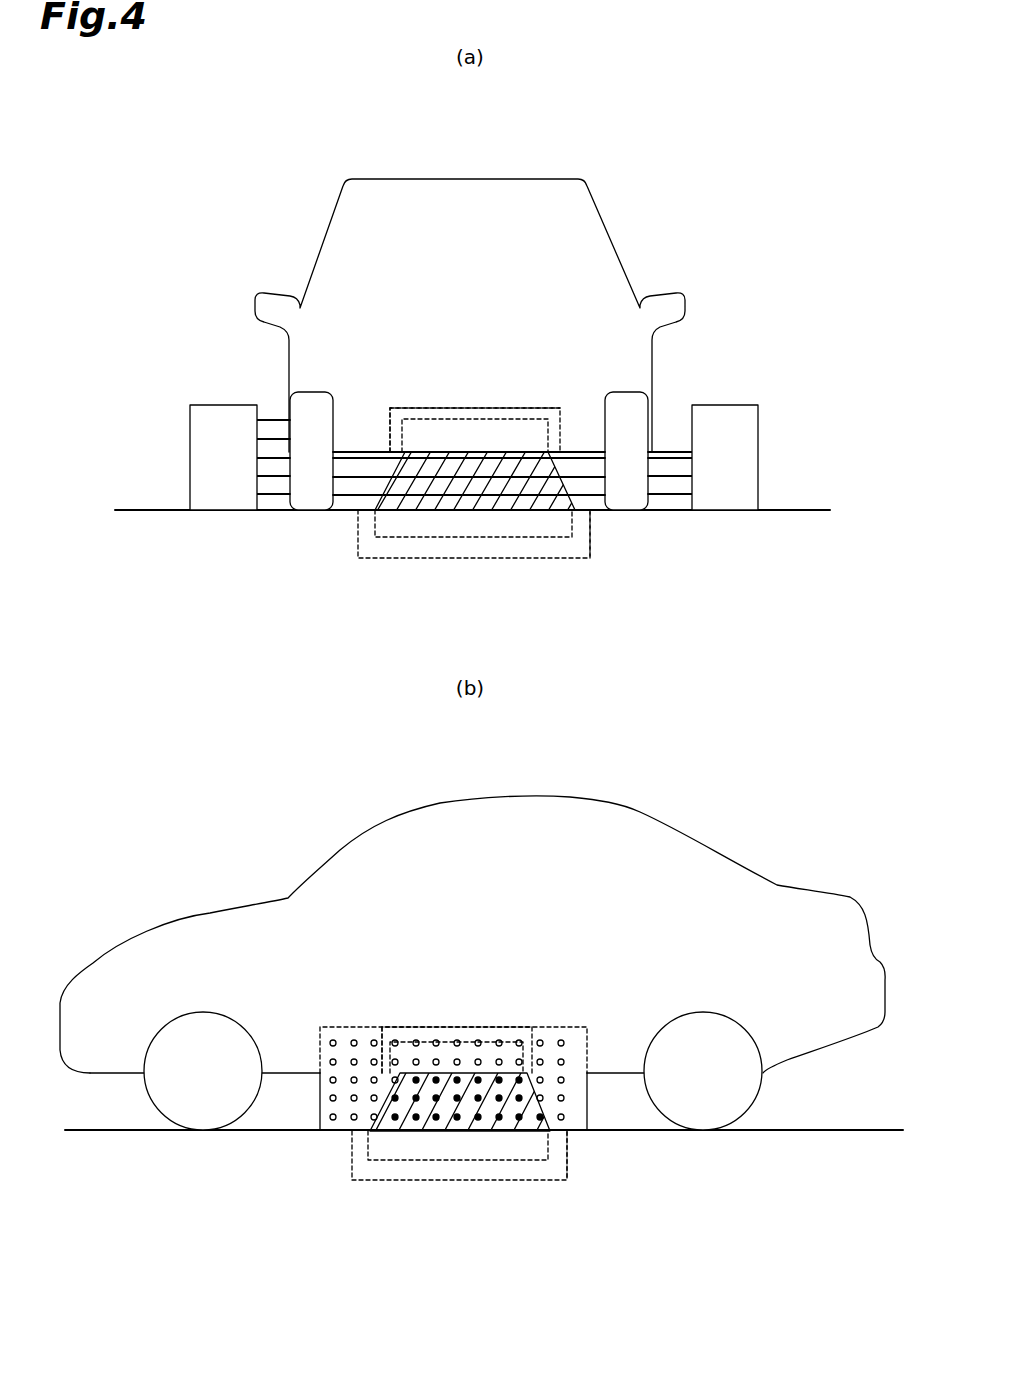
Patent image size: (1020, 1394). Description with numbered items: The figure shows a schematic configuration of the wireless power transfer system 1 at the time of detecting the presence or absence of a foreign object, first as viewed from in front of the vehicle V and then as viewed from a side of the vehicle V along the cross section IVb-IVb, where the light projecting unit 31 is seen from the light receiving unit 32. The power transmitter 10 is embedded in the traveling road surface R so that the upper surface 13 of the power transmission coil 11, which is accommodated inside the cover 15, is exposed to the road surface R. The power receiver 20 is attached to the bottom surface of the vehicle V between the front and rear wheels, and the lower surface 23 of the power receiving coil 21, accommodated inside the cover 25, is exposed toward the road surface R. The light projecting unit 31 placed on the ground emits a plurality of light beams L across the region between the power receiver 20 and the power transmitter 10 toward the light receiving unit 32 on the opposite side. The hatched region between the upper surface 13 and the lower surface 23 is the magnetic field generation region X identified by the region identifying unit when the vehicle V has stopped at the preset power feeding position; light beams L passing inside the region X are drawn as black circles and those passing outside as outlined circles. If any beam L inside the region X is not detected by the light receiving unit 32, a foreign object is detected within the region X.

The wireless power transfer system 1 is at (788, 398).
The power transmitter 10 is at (348, 555).
The power transmission coil 11 is at (402, 538).
The upper surface 13 is at (492, 497).
The cover 15 is at (590, 543).
The power receiver 20 is at (418, 400).
The power receiving coil 21 is at (388, 428).
The lower surface 23 is at (489, 450).
The cover 25 is at (518, 407).
The light projecting unit 31 is at (216, 403).
The light receiving unit 32 is at (727, 404).
The vehicle V is at (337, 203).
The light beams L is at (267, 455).
The traveling road surface R is at (148, 508).
The magnetic field generation region X is at (578, 492).
The cross section IVb- IVb is at (673, 190).